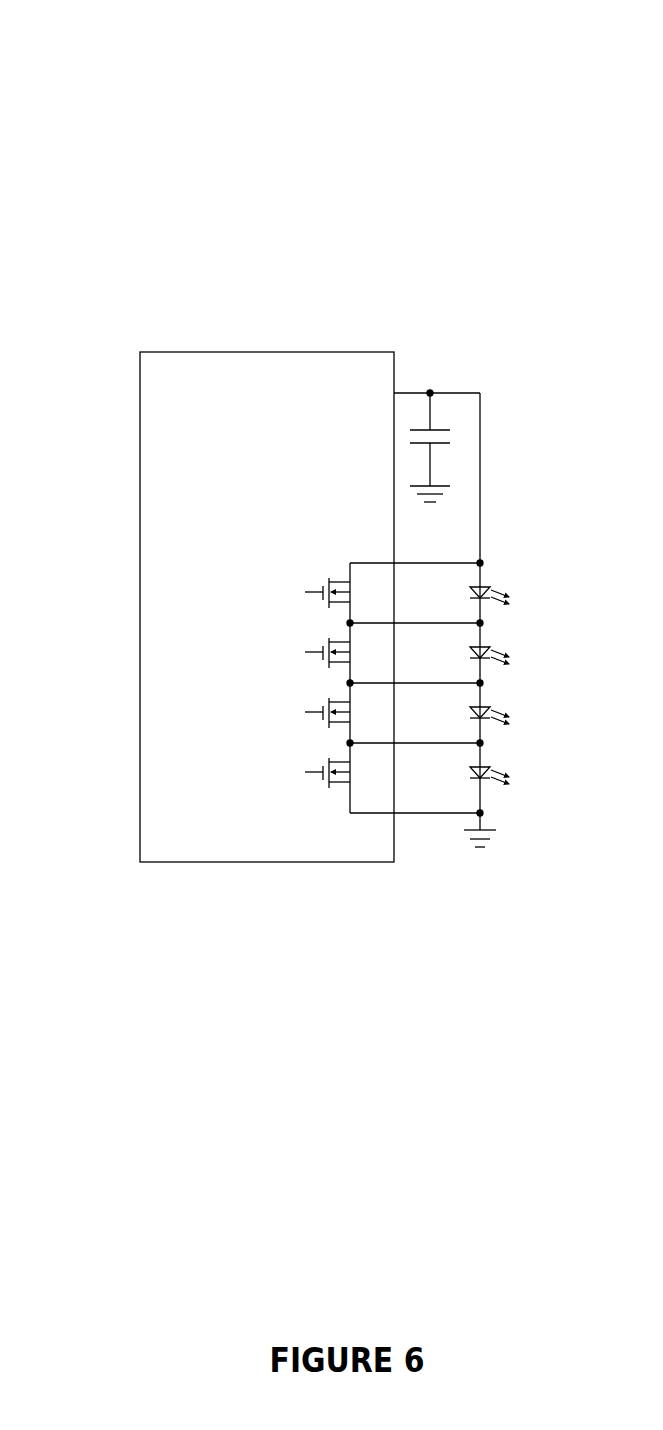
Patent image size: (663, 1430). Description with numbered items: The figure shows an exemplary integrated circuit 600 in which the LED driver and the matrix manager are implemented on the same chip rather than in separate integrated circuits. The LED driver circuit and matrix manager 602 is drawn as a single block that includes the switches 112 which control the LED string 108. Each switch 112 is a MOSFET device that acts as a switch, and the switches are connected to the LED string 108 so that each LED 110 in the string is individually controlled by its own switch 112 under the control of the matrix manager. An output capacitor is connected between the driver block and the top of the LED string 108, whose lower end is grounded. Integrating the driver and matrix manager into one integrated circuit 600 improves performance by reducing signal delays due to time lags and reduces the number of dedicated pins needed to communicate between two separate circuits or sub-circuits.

The integrated circuit 600 is at (363, 22).
The LED driver circuit and matrix manager 602 is at (137, 463).
The switch 112 is at (322, 592).
The LED string 108 is at (498, 576).
The LED 110 is at (514, 714).